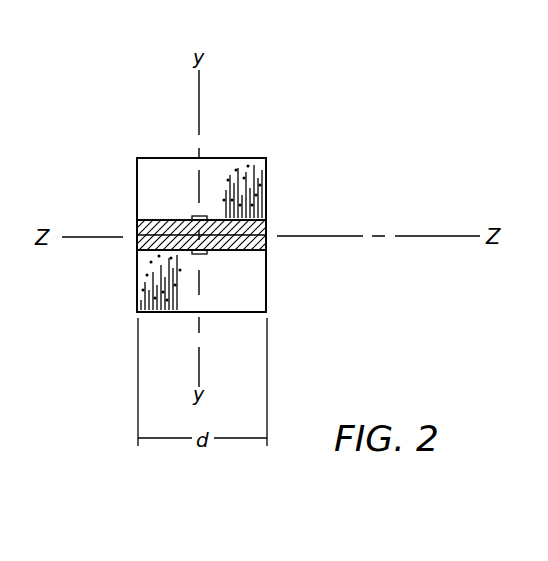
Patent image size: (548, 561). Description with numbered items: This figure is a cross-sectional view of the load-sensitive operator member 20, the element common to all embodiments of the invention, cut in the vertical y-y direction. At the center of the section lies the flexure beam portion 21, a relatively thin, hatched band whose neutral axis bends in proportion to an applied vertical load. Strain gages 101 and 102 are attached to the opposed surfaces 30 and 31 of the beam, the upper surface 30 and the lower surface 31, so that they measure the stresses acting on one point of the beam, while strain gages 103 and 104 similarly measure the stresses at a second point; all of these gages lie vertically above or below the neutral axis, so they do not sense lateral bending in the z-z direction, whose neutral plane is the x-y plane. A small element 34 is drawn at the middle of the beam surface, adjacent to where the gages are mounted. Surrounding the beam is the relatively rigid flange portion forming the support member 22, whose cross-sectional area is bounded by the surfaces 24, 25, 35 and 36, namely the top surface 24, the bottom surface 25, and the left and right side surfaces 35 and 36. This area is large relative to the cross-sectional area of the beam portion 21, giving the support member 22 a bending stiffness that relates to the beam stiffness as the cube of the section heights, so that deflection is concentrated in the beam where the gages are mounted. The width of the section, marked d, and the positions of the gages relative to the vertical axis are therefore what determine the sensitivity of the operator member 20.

The load-sensitive operator member 20 is at (192, 153).
The surface 24 is at (221, 153).
The support member 22 is at (254, 299).
The flexure beam portion 21 is at (137, 221).
The electrode 34 is at (201, 241).
The surface 35 is at (130, 247).
The surface 36 is at (272, 243).
The surface 30 is at (254, 216).
The surface 31 is at (254, 258).
The surface 25 is at (240, 320).
The strain gage 101 is at (207, 214).
The strain gage 103 is at (293, 190).
The strain gage 104 is at (160, 307).
The strain gage 102 is at (192, 258).